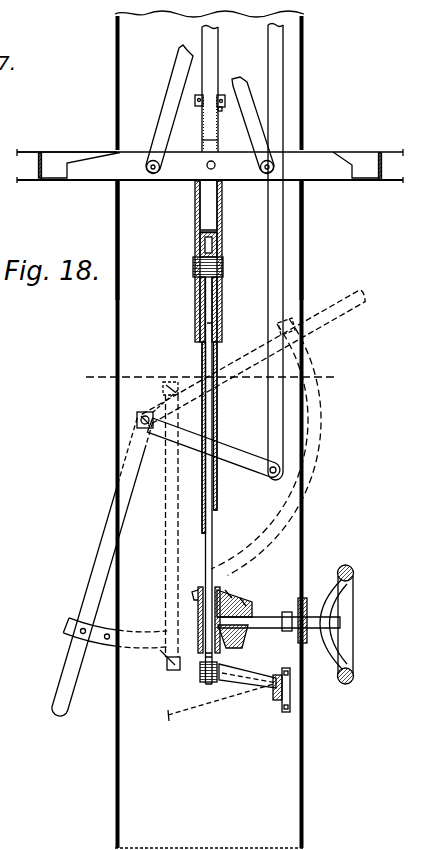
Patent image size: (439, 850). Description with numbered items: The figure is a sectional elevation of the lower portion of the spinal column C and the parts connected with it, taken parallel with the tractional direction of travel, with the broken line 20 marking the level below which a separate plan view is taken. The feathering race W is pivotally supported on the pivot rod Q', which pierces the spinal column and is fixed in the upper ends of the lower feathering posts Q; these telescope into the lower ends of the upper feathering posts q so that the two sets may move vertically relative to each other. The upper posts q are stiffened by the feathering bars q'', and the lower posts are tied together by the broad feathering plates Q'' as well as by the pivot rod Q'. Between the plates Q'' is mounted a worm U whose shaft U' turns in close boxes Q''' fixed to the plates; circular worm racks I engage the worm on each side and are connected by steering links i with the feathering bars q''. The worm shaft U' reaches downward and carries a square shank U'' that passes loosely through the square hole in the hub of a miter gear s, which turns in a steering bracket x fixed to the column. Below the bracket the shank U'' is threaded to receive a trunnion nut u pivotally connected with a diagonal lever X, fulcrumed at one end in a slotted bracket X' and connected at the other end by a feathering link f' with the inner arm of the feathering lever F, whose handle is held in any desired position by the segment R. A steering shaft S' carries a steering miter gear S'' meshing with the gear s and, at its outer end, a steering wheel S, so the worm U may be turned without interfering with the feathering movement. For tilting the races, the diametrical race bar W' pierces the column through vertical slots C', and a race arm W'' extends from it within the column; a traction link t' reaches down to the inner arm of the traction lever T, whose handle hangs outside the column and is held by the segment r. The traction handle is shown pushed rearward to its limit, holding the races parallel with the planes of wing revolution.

The spinal column C is at (209, 429).
The vertical slots C' is at (219, 240).
The feathering race W is at (67, 159).
The diametrical race bar W' is at (210, 166).
The race arm W'' is at (209, 109).
The upper feathering post q is at (210, 89).
The feathering bar q'' is at (202, 113).
The steering link i is at (219, 116).
The traction link t' is at (269, 252).
The lower feathering post Q is at (208, 205).
The pivot rod Q' is at (220, 166).
The feathering plate Q'' is at (211, 261).
The close box Q''' is at (206, 287).
The circular worm rack I is at (222, 228).
The worm U is at (220, 270).
The worm shaft U' is at (218, 463).
The square shank U'' is at (220, 613).
The trunnion nut u is at (200, 681).
The steering bracket x is at (199, 618).
The miter gear s is at (219, 594).
The steering miter gear S'' is at (238, 643).
The steering shaft S' is at (278, 620).
The steering wheel S is at (345, 624).
The diagonal lever X is at (222, 695).
The slotted bracket X' is at (270, 706).
The traction lever T is at (44, 687).
The feathering lever F is at (341, 313).
The segment R is at (258, 552).
The feathering link f' is at (164, 526).
The segment r is at (66, 623).
The broken line 20— 20 is at (206, 381).